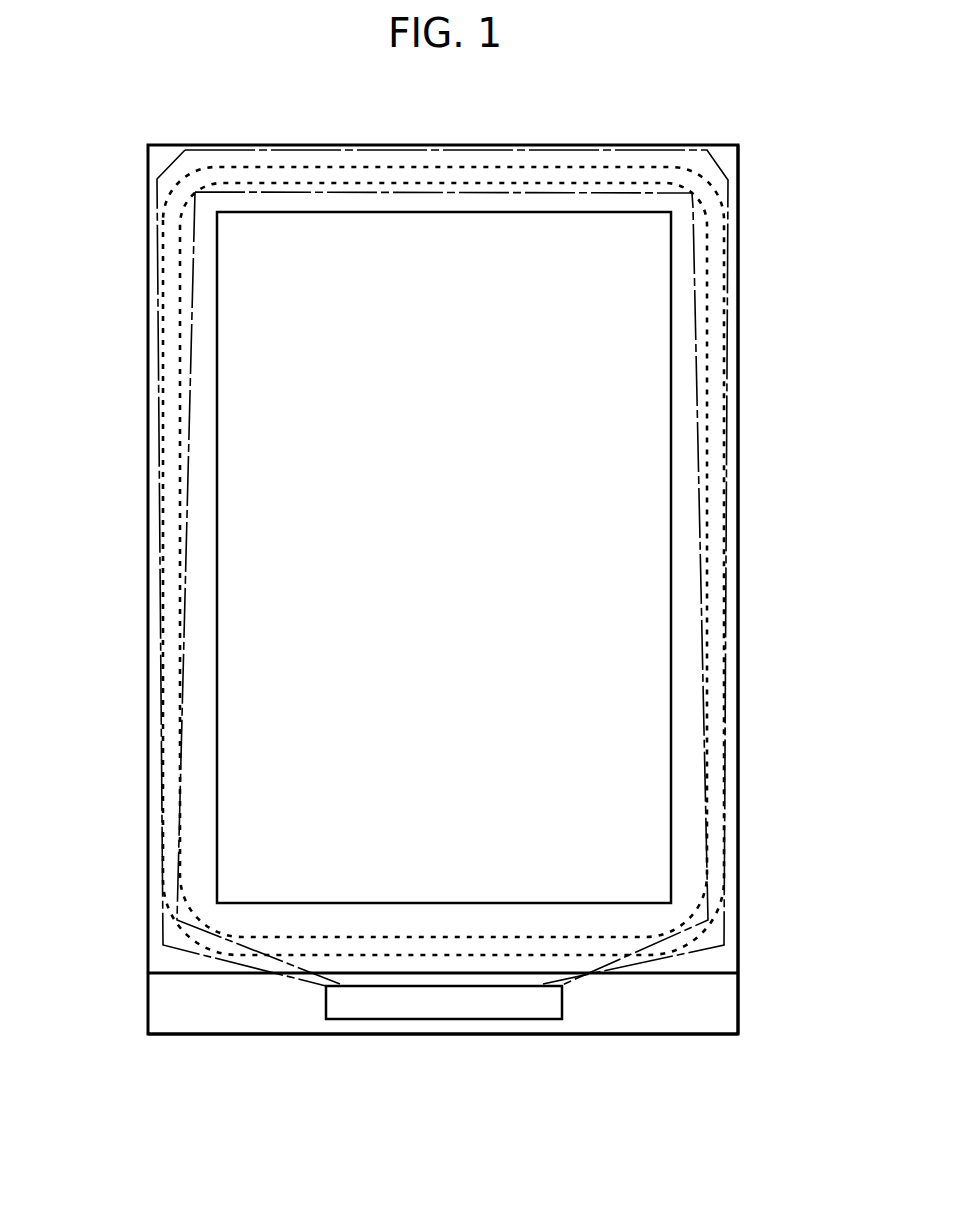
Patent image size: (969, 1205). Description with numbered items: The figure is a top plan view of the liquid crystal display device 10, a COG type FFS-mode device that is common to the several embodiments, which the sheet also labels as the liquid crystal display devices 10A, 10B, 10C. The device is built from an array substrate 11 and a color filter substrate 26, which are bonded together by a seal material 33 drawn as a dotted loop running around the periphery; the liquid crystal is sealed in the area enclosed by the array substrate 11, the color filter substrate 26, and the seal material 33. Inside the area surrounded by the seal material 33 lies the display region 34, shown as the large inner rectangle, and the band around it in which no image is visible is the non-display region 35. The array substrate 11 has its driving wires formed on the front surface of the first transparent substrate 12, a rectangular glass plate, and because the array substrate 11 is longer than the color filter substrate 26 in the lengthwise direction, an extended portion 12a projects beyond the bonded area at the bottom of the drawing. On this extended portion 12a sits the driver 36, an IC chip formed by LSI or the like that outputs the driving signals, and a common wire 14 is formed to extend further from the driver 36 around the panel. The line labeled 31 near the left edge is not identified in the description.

The liquid crystal display device 10 is at (477, 98).
The display device (first embodiment) 10A is at (533, 98).
The display device (second embodiment) 10B is at (589, 98).
The display device (third embodiment) 10C is at (644, 98).
The array substrate 11 is at (129, 1044).
The first transparent substrate 12 is at (738, 1002).
The extended portion 12a is at (710, 1027).
The common wire 14 is at (693, 168).
The color filter substrate 26 is at (750, 703).
The first sheet 31 is at (203, 460).
The seal material 33 is at (724, 300).
The display region 34 is at (617, 538).
The non-display region 35 is at (740, 859).
The driver 36 is at (425, 1005).